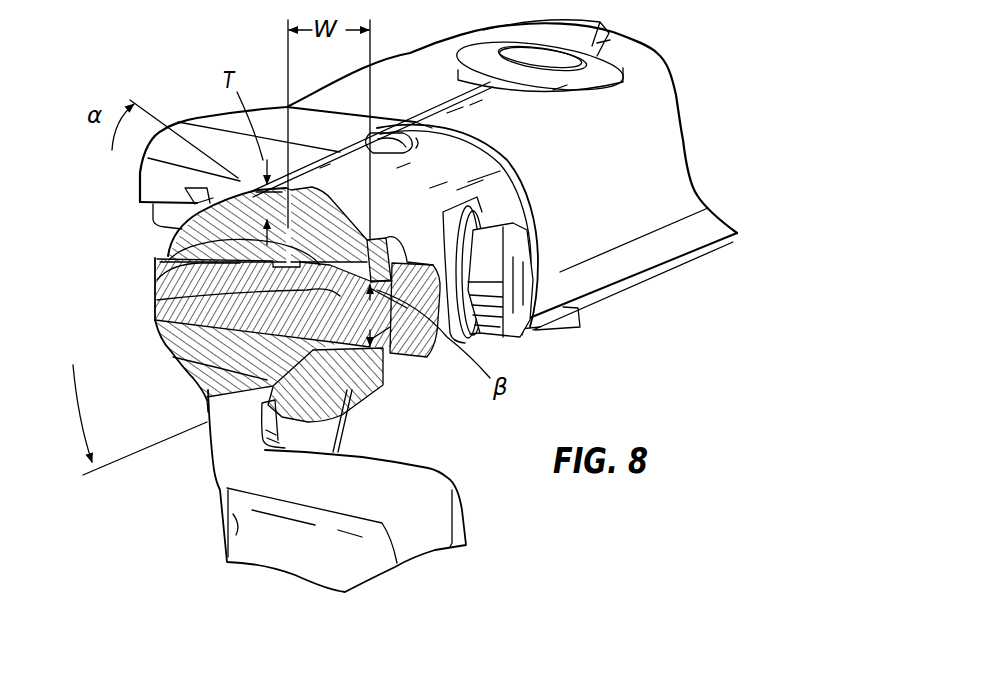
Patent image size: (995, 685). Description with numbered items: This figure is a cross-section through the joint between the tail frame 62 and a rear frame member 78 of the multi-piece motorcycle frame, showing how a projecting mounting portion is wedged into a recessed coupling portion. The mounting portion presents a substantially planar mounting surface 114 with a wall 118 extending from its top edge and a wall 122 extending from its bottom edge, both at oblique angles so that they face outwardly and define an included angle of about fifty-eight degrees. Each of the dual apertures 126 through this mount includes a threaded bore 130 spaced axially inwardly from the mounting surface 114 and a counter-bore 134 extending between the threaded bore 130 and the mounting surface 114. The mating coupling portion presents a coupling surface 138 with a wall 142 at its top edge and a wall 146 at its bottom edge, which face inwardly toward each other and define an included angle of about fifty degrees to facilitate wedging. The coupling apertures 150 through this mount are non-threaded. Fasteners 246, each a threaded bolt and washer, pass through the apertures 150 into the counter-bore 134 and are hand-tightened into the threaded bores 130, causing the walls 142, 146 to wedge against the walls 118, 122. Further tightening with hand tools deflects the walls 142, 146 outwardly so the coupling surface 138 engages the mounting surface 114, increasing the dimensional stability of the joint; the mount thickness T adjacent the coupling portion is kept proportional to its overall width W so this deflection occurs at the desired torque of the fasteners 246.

The tail frame 62 is at (627, 258).
The rear frame member 78 is at (237, 525).
The mounting surface 114 is at (375, 238).
The wall 118 is at (340, 160).
The wall 122 is at (295, 418).
The aperture 126 is at (158, 260).
The threaded bore 130 is at (158, 278).
The counter-bore 134 is at (157, 318).
The coupling surface 138 is at (188, 362).
The wall 142 is at (180, 233).
The wall 146 is at (203, 380).
The coupling aperture 150 is at (158, 298).
The fastener 246 is at (543, 328).